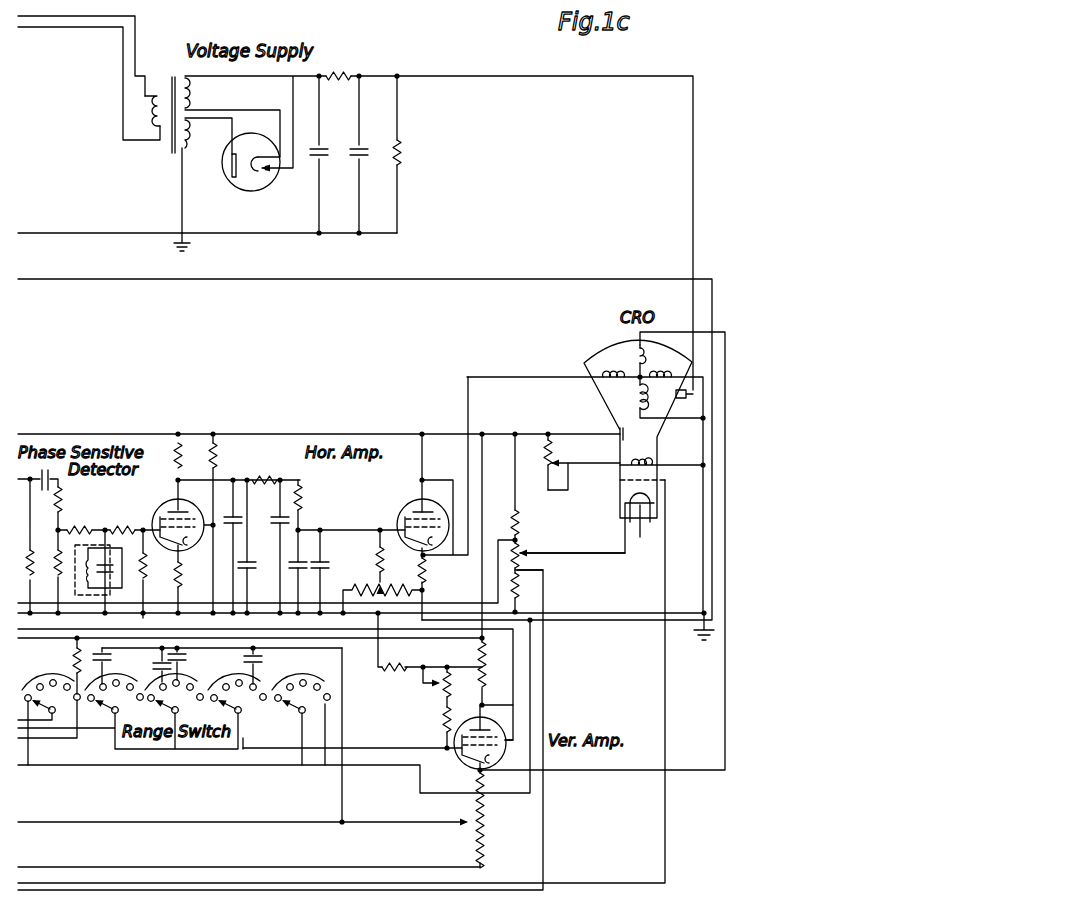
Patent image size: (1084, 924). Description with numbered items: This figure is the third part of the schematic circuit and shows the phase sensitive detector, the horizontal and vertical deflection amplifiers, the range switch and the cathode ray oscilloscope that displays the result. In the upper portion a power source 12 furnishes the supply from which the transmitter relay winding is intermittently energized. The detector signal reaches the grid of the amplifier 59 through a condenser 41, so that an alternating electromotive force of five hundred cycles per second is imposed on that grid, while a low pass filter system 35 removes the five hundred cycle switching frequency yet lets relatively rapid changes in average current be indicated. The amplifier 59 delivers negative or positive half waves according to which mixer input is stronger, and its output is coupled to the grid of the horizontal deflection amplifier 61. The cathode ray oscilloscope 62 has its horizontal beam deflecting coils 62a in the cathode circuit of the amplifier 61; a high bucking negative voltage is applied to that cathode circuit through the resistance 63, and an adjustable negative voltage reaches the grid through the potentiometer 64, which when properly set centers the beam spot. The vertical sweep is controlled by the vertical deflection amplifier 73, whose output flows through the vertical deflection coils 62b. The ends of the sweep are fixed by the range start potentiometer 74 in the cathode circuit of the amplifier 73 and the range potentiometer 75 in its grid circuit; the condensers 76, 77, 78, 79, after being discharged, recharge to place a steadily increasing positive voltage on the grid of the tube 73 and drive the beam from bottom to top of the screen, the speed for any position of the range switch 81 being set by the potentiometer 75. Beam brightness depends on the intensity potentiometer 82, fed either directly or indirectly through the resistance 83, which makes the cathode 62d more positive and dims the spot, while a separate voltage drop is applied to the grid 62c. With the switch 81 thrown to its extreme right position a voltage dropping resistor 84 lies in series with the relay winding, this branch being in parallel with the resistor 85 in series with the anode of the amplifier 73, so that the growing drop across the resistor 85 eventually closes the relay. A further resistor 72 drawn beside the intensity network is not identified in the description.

The power source 12 is at (262, 221).
The low pass filter system 35 is at (107, 594).
The condenser 41 is at (43, 491).
The amplifier 59 is at (168, 510).
The horizontal deflection amplifier 61 is at (406, 510).
The cathode ray oscilloscope 62 is at (586, 476).
The horizontal beam deflecting coils 62a is at (612, 367).
The vertical deflection coils 62b is at (658, 367).
The grid of the cathode ray tube 62c is at (619, 481).
The cathode 62d is at (630, 508).
The resistance 63 is at (429, 566).
The potentiometer 64 is at (373, 585).
The resistor 72 is at (517, 588).
The vertical deflection amplifier 73 is at (504, 753).
The range start potentiometer 74 is at (486, 826).
The range potentiometer 75 is at (449, 681).
The condenser 76 is at (110, 657).
The condenser 77 is at (161, 670).
The condenser 78 is at (179, 660).
The condenser 79 is at (250, 660).
The range switch 81 is at (282, 740).
The intensity potentiometer 82 is at (522, 545).
The resistance 83 is at (521, 523).
The voltage dropping resistor 84 is at (73, 658).
The resistor 85 is at (495, 569).